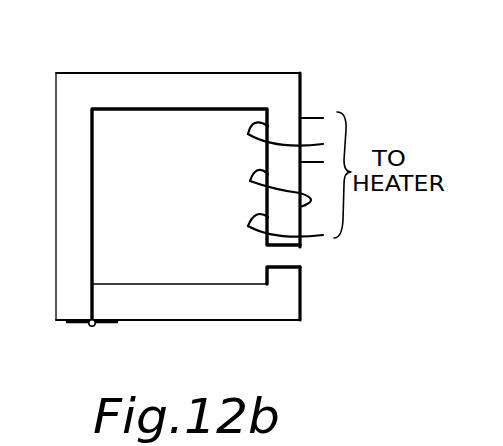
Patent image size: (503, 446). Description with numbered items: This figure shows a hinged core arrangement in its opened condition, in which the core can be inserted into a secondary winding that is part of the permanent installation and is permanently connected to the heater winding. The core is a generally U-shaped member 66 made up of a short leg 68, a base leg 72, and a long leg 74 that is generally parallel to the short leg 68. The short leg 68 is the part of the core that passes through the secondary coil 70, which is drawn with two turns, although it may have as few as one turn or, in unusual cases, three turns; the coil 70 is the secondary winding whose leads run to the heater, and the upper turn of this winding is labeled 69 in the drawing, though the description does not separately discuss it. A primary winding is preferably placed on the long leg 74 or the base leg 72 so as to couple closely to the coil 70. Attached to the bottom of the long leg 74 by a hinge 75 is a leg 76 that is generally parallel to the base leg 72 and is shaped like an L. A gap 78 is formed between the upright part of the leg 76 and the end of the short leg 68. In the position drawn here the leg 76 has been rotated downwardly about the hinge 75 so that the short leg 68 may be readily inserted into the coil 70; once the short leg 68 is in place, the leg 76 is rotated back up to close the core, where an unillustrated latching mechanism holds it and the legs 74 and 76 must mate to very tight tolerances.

The U-shaped member 66 is at (127, 68).
The base leg 72 is at (221, 84).
The short leg 68 is at (286, 114).
The heater wire winding 69 is at (248, 133).
The secondary coil 70 is at (248, 225).
The long leg 74 is at (57, 205).
The hinge 75 is at (90, 327).
The L-shaped leg 76 is at (221, 312).
The gap 78 is at (296, 254).